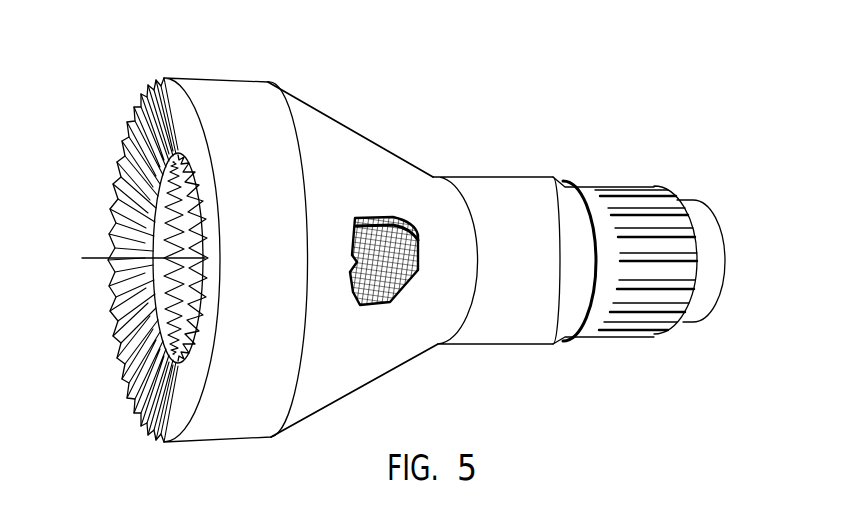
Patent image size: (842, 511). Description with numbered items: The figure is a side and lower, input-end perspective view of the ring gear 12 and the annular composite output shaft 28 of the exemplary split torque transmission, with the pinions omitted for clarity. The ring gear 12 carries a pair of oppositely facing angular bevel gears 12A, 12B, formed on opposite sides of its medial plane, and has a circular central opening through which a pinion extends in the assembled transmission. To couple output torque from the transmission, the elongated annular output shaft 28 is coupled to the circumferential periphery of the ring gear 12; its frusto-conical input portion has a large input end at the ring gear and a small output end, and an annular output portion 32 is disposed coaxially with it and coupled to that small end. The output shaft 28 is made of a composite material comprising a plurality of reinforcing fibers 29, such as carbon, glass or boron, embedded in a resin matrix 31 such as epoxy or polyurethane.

The ring gear 12 is at (190, 105).
The angular bevel gear 12A is at (165, 268).
The angular bevel gear 12B is at (133, 138).
The annular output shaft 28 is at (533, 177).
The reinforcing fibers 29 is at (368, 277).
The resin matrix 31 is at (368, 277).
The annular output portion 32 is at (383, 148).